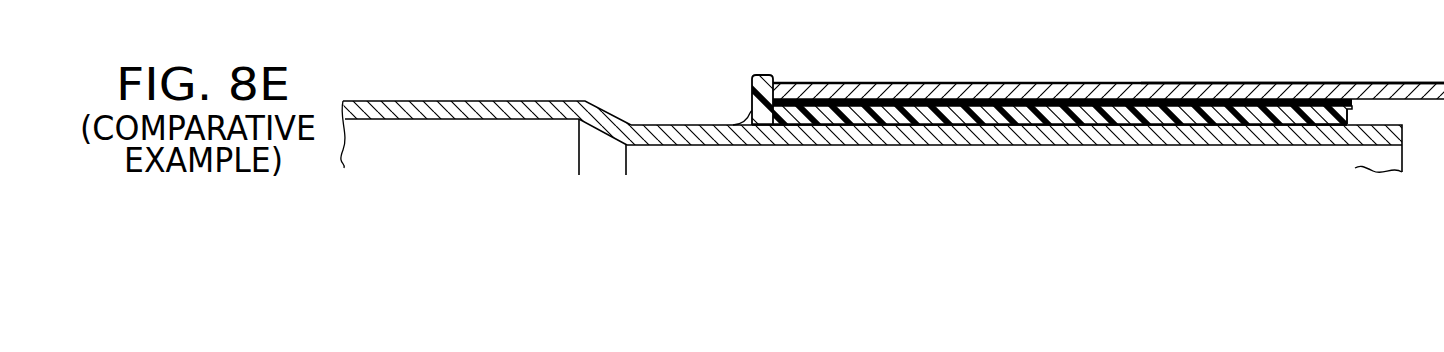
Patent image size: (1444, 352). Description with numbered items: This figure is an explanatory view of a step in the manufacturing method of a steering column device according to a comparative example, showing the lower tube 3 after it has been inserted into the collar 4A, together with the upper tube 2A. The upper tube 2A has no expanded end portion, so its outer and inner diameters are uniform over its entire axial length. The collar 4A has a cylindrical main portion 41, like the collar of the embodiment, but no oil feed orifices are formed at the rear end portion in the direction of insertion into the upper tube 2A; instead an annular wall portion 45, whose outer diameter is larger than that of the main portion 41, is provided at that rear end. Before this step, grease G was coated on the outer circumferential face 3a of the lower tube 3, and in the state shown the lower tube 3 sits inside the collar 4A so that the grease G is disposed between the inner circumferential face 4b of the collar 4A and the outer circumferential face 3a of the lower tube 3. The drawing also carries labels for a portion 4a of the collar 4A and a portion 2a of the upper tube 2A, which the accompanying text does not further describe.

The lower tube 3 is at (532, 100).
The outer circumferential face 3a is at (653, 124).
The collar 4A is at (1055, 92).
The annular wall portion 45 is at (763, 74).
The grease G is at (741, 116).
The cylindrical main portion 41 is at (925, 104).
The upper layer 4a is at (963, 100).
The inner circumferential face 4b is at (967, 124).
The upper tube 2A is at (1141, 83).
The film end portion 2a is at (1166, 107).